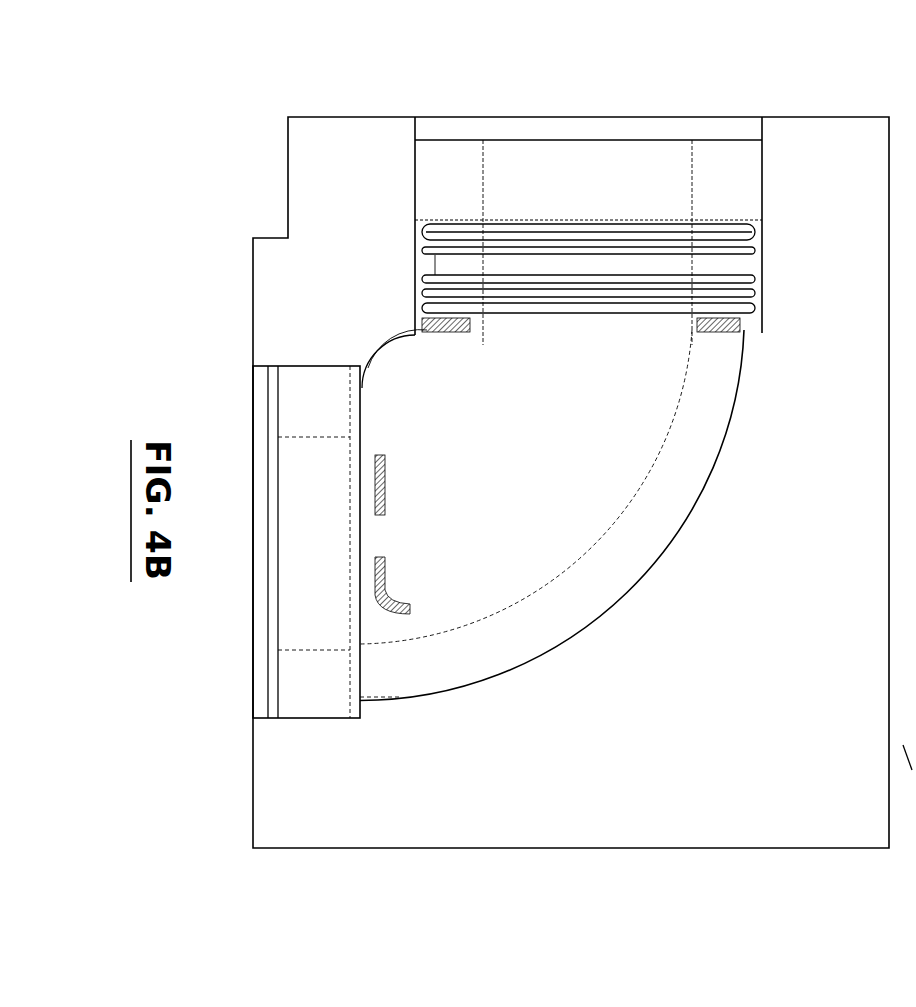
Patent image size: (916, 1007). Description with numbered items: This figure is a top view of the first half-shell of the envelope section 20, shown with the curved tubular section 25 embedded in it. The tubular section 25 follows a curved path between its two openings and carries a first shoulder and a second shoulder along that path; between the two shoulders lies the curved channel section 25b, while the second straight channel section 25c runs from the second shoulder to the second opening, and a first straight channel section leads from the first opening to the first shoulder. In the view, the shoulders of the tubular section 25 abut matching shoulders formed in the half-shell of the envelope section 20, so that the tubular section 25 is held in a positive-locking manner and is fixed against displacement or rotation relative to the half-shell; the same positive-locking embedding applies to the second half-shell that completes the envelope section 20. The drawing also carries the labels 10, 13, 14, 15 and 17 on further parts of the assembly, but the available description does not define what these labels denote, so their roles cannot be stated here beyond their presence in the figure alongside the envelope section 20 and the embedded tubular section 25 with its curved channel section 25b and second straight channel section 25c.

The elbow fitting 10 is at (253, 478).
The first socket end 13 is at (355, 718).
The outer wall of elbow body 14 is at (360, 705).
The threaded portion 15 is at (760, 328).
The internal flow passage 17 is at (590, 477).
The envelope section 20 is at (622, 117).
The tubular section 25 is at (753, 337).
The curved channel section 25b is at (490, 533).
The second straight channel section 25c is at (437, 173).